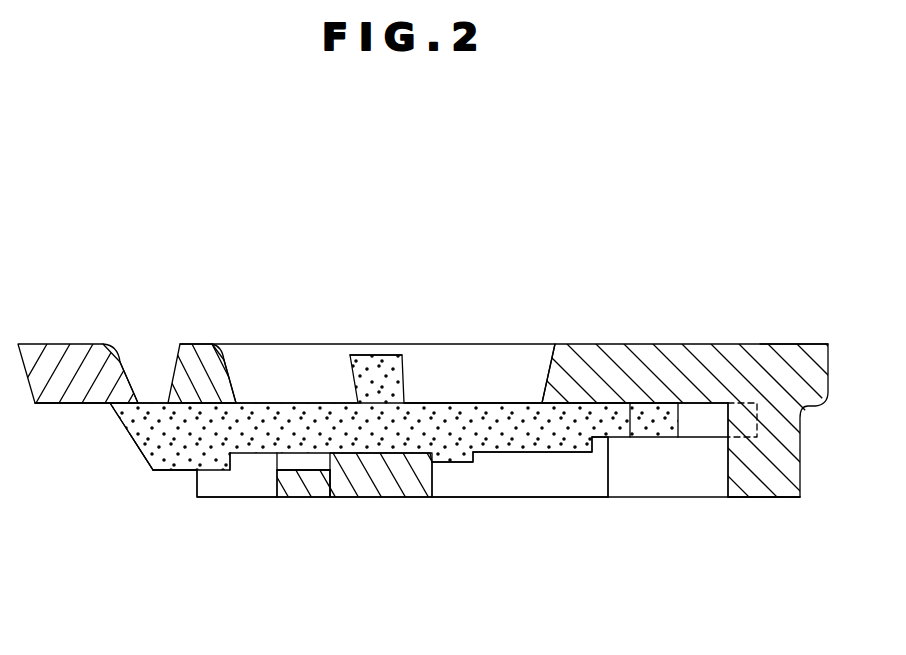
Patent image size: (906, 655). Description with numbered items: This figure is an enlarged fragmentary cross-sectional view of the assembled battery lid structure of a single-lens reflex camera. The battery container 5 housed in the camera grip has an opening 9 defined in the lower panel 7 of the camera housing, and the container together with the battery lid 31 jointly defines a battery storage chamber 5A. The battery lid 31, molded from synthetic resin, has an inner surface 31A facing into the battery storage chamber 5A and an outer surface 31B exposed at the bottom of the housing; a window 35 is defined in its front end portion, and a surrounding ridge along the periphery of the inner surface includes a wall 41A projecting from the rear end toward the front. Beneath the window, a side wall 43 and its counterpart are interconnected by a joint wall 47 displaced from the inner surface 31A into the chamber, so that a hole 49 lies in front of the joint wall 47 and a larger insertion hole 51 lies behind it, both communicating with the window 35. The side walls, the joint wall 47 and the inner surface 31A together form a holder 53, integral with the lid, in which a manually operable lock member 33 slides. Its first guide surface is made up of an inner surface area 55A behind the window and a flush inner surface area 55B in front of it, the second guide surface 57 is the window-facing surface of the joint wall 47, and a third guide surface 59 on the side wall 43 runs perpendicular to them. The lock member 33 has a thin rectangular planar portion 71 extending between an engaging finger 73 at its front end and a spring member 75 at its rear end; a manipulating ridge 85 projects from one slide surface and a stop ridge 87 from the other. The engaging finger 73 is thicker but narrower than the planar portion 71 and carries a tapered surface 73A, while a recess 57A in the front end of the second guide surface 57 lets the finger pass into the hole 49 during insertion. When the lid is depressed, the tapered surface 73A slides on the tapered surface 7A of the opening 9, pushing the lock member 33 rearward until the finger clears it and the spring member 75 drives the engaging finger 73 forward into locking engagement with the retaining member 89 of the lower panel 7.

The battery container 5 is at (45, 403).
The battery storage chamber 5A is at (476, 544).
The lower panel 7 is at (70, 345).
The tapered surface 7A is at (133, 390).
The opening 9 is at (125, 372).
The battery lid 31 is at (705, 326).
The inner surface 31A is at (712, 403).
The outer surface 31B is at (770, 343).
The manually operable lock member 33 is at (314, 392).
The window 35 is at (230, 375).
The wall 41A is at (755, 497).
The side wall 43 is at (587, 497).
The joint wall 47 is at (315, 497).
The hole 49 is at (207, 497).
The insertion hole 51 is at (507, 497).
The holder 53 is at (360, 497).
The inner surface area 55A is at (557, 402).
The inner surface area 55B is at (180, 404).
The second guide surface 57 is at (365, 454).
The recess 57A is at (292, 465).
The third guide surface 59 is at (550, 497).
The planar portion 71 is at (470, 403).
The engaging finger 73 is at (162, 472).
The tapered surface 73A is at (132, 458).
The spring member 75 is at (687, 437).
The manipulating ridge 85 is at (374, 355).
The stop ridge 87 is at (456, 467).
The retaining member 89 is at (121, 420).